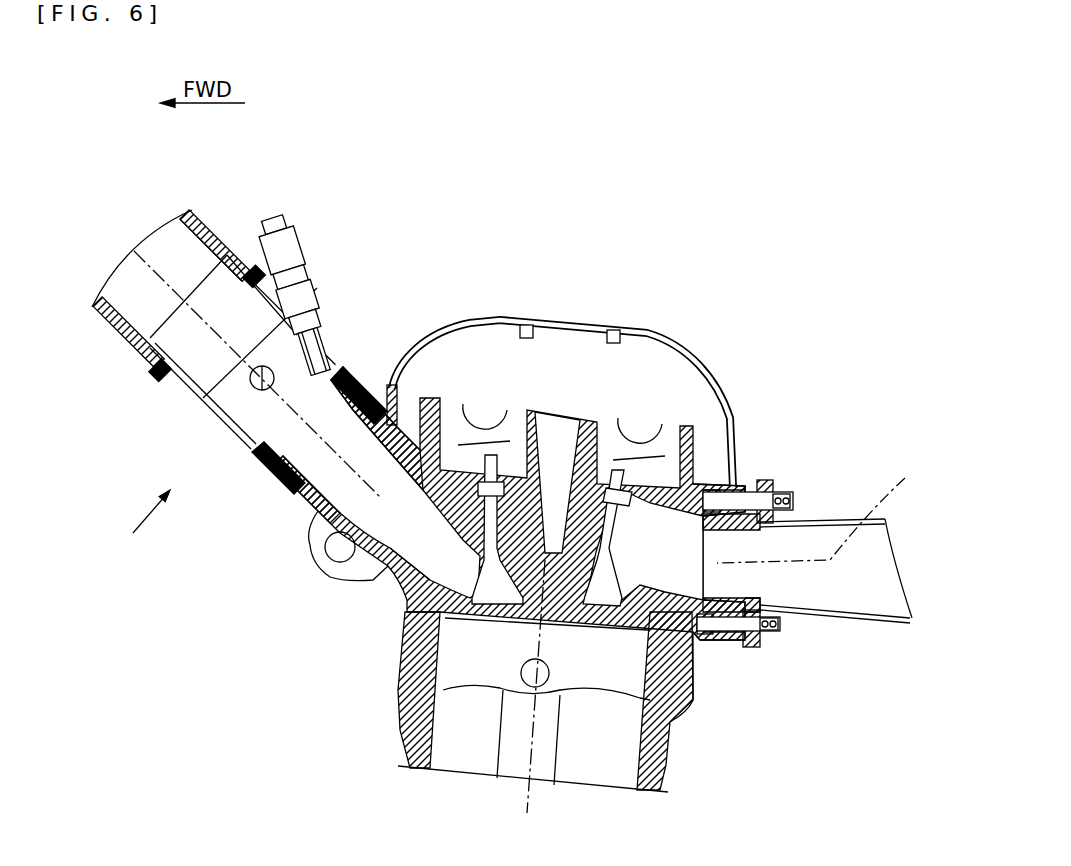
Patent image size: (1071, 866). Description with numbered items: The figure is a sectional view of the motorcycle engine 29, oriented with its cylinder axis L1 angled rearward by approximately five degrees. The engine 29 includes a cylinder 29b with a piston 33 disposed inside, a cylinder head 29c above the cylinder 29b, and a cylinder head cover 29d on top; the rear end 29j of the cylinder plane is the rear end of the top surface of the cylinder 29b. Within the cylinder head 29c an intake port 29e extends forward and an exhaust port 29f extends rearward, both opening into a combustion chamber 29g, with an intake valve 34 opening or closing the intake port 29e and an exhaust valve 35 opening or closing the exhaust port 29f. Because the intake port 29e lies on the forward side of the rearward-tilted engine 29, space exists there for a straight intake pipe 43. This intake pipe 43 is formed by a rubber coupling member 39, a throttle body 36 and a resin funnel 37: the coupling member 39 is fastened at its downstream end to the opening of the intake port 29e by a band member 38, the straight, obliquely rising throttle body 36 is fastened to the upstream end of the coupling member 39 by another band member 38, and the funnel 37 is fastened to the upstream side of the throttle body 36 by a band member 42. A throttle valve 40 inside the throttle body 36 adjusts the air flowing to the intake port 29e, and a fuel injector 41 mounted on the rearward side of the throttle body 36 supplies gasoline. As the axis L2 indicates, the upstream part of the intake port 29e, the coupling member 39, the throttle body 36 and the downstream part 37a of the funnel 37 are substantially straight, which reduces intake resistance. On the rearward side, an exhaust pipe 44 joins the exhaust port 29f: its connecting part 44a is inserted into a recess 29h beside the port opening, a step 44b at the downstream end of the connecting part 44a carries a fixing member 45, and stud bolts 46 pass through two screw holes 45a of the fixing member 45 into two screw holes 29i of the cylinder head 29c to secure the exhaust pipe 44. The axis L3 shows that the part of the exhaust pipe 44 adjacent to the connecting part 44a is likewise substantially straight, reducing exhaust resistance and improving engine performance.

The engine 29 is at (777, 368).
The cylinder 29b is at (688, 707).
The cylinder head 29c is at (737, 483).
The cylinder head cover 29d is at (707, 363).
The intake port 29e is at (413, 552).
The exhaust port 29f is at (690, 655).
The combustion chamber 29g is at (475, 662).
The recess 29h is at (747, 510).
The screw hole 29i is at (743, 497).
The rear end of cylinder plane 29j is at (700, 637).
The piston 33 is at (480, 613).
The intake valve 34 is at (493, 518).
The exhaust valve 35 is at (613, 533).
The throttle body 36 is at (200, 387).
The funnel 37 is at (137, 333).
The downstream part of funnel 37a is at (213, 305).
The band member 38 is at (265, 468).
The coupling member 39 is at (270, 480).
The throttle valve 40 is at (248, 387).
The fuel injector 41 is at (290, 292).
The band member 42 is at (165, 362).
The intake pipe 43 is at (138, 520).
The exhaust pipe 44 is at (866, 486).
The connecting part 44a is at (717, 617).
The step 44b is at (757, 607).
The fixing member 45 is at (753, 653).
The screw hole 45a is at (790, 497).
The stud bolt 46 is at (803, 507).
The cylinder axis L1 is at (528, 800).
The axis L2 is at (222, 318).
The axis L3 is at (818, 510).